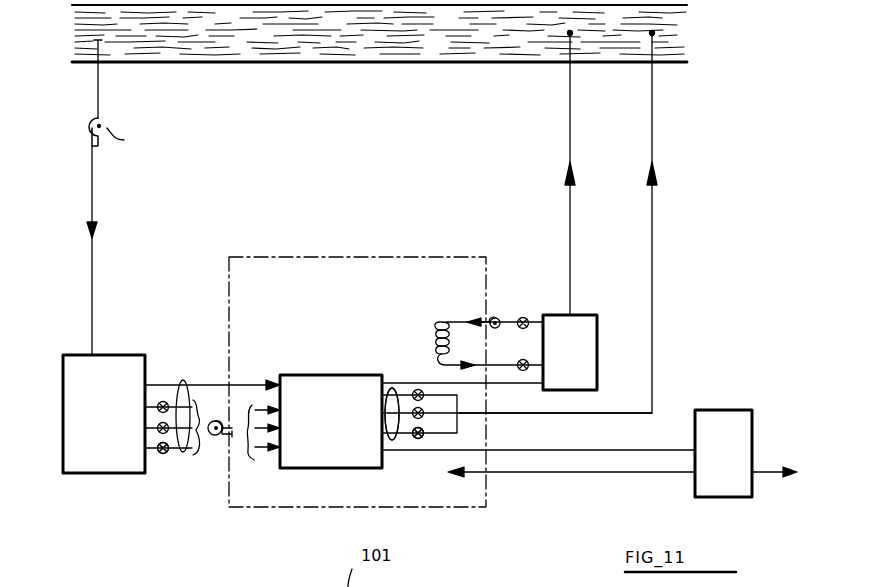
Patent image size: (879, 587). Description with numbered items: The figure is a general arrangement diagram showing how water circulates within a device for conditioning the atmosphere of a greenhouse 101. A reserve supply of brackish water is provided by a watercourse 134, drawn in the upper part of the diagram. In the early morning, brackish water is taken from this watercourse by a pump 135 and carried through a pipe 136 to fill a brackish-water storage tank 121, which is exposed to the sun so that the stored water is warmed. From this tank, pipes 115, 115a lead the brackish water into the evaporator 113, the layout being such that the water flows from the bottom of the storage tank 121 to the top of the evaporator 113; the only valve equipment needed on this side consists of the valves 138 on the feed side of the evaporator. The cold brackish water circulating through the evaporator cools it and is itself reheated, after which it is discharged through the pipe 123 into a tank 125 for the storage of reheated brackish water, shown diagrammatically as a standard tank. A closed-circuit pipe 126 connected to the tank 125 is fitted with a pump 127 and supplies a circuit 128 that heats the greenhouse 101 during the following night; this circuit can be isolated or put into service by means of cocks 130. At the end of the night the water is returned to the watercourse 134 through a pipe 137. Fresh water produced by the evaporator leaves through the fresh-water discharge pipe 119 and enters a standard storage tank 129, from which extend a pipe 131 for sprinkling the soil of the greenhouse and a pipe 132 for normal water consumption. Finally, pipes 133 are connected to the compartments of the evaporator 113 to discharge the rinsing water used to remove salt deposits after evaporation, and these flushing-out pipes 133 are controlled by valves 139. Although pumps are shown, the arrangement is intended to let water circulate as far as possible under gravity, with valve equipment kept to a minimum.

The greenhouse 101 is at (408, 257).
The evaporator 113 is at (356, 468).
The pipes 115 is at (183, 380).
The connection lines 115a is at (245, 380).
The fresh-water discharge pipe 119 is at (548, 450).
The brackish-water storage tank 121 is at (92, 474).
The brackish-water discharge pipe 123 is at (405, 382).
The reheated brackish-water storage tank 125 is at (588, 340).
The closed-circuit pipe 126 is at (484, 320).
The pump 127 is at (500, 318).
The heating circuit 128 is at (440, 322).
The fresh-water storage tank 129 is at (716, 420).
The cocks 130 is at (526, 318).
The sprinkling pipe 131 is at (578, 474).
The water consumption pipe 132 is at (760, 478).
The rinsing-water discharge pipes 133 is at (395, 440).
The watercourse 134 is at (440, 50).
The pump 135 is at (123, 134).
The pipe 136 is at (90, 285).
The discharge pipe 137 is at (571, 135).
The valves 138 is at (165, 455).
The valves 139 is at (422, 440).